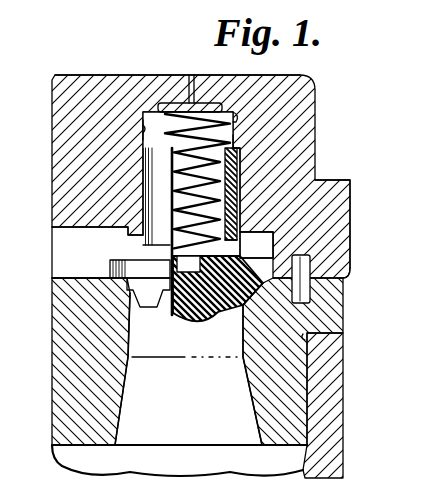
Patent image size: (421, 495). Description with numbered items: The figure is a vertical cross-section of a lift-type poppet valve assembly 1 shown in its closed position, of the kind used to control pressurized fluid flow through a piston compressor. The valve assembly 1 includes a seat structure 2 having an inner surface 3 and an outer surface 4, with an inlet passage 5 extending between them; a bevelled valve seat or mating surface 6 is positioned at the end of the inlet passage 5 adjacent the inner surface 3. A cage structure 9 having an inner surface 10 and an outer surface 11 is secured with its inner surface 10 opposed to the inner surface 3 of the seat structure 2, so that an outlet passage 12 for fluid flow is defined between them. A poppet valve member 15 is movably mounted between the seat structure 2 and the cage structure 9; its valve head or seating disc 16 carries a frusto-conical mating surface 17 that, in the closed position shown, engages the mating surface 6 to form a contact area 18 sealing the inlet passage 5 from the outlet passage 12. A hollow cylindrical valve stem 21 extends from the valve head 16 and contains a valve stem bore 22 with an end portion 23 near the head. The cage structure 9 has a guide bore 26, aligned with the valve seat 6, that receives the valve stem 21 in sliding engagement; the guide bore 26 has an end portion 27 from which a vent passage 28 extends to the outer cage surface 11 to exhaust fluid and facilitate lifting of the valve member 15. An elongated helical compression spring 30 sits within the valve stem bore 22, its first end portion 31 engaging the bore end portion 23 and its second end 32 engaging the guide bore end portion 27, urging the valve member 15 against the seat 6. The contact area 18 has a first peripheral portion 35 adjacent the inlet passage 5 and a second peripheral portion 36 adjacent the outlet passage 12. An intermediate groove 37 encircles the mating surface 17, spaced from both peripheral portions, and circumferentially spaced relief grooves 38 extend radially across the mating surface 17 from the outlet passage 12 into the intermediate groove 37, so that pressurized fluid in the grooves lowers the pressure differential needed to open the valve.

The poppet valve assembly 1 is at (337, 107).
The seat structure 2 is at (345, 320).
The inner surface 3 is at (347, 269).
The outer surface 4 is at (92, 446).
The inlet passage 5 is at (252, 407).
The valve seat 6 is at (137, 303).
The cage structure 9 is at (352, 230).
The inner surface 10 is at (53, 230).
The outer surface 11 is at (100, 78).
The outlet passage 12 is at (58, 277).
The poppet valve member 15 is at (250, 155).
The valve head 16 is at (250, 258).
The mating surface 17 is at (242, 320).
The contact area 18 is at (112, 281).
The valve stem 21 is at (236, 182).
The valve stem bore 22 is at (228, 153).
The end portion 23 is at (228, 222).
The guide bore 26 is at (147, 128).
The end portion 27 is at (236, 114).
The vent passage 28 is at (197, 92).
The helical compression spring 30 is at (236, 137).
The first end portion 31 is at (168, 255).
The second end 32 is at (168, 103).
The first peripheral portion 35 is at (126, 307).
The second peripheral portion 36 is at (107, 275).
The intermediate groove 37 is at (163, 318).
The relief grooves 38 is at (283, 258).